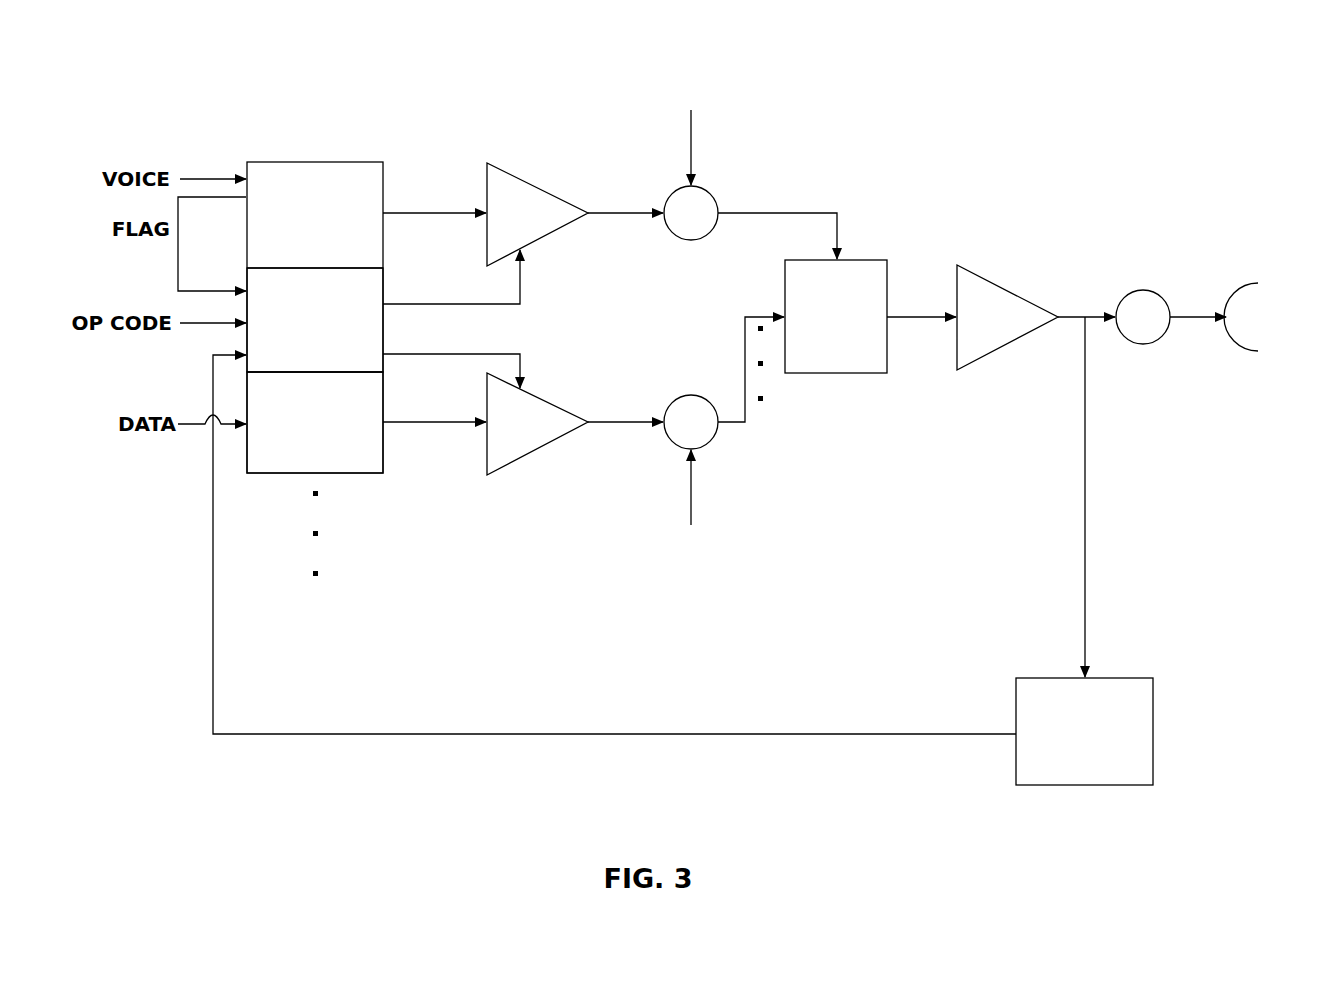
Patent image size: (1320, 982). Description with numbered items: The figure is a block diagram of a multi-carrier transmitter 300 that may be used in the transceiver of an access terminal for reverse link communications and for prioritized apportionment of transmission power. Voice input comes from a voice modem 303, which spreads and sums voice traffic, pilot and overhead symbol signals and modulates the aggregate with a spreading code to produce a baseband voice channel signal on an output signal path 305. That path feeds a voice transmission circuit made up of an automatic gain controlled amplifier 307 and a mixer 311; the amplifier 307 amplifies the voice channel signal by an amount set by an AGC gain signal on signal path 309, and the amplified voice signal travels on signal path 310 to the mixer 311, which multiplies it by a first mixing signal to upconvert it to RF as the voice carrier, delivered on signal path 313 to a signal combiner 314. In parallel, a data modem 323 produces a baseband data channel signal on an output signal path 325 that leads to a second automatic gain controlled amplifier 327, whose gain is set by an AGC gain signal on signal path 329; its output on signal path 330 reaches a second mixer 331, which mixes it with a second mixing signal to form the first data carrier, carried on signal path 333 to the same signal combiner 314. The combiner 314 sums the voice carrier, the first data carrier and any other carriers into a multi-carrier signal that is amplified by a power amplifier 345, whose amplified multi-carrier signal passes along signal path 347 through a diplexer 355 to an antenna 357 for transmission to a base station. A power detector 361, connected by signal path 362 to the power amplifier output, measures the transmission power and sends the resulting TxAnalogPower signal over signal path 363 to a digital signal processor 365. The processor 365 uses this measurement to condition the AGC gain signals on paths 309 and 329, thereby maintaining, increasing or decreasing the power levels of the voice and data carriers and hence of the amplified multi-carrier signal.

The multi-carrier transmitter 300 is at (466, 88).
The voice modem 303 is at (278, 162).
The output signal path 305 is at (420, 213).
The automatic gain controlled amplifier 307 is at (513, 173).
The signal path 309 is at (520, 296).
The signal path 310 is at (605, 215).
The mixer 311 is at (712, 192).
The signal path 313 is at (760, 212).
The signal combiner 314 is at (855, 260).
The data modem 323 is at (263, 474).
The output signal path 325 is at (410, 425).
The automatic gain controlled amplifier 327 is at (557, 440).
The signal path 329 is at (512, 347).
The signal path 330 is at (607, 422).
The mixer 331 is at (668, 442).
The signal path 333 is at (730, 425).
The power amplifier 345 is at (993, 280).
The signal path 347 is at (1072, 316).
The diplexer 355 is at (1157, 291).
The antenna 357 is at (1242, 284).
The power detector 361 is at (1115, 678).
The signal path 362 is at (1085, 470).
The signal path 363 is at (810, 734).
The digital signal processor 365 is at (315, 320).